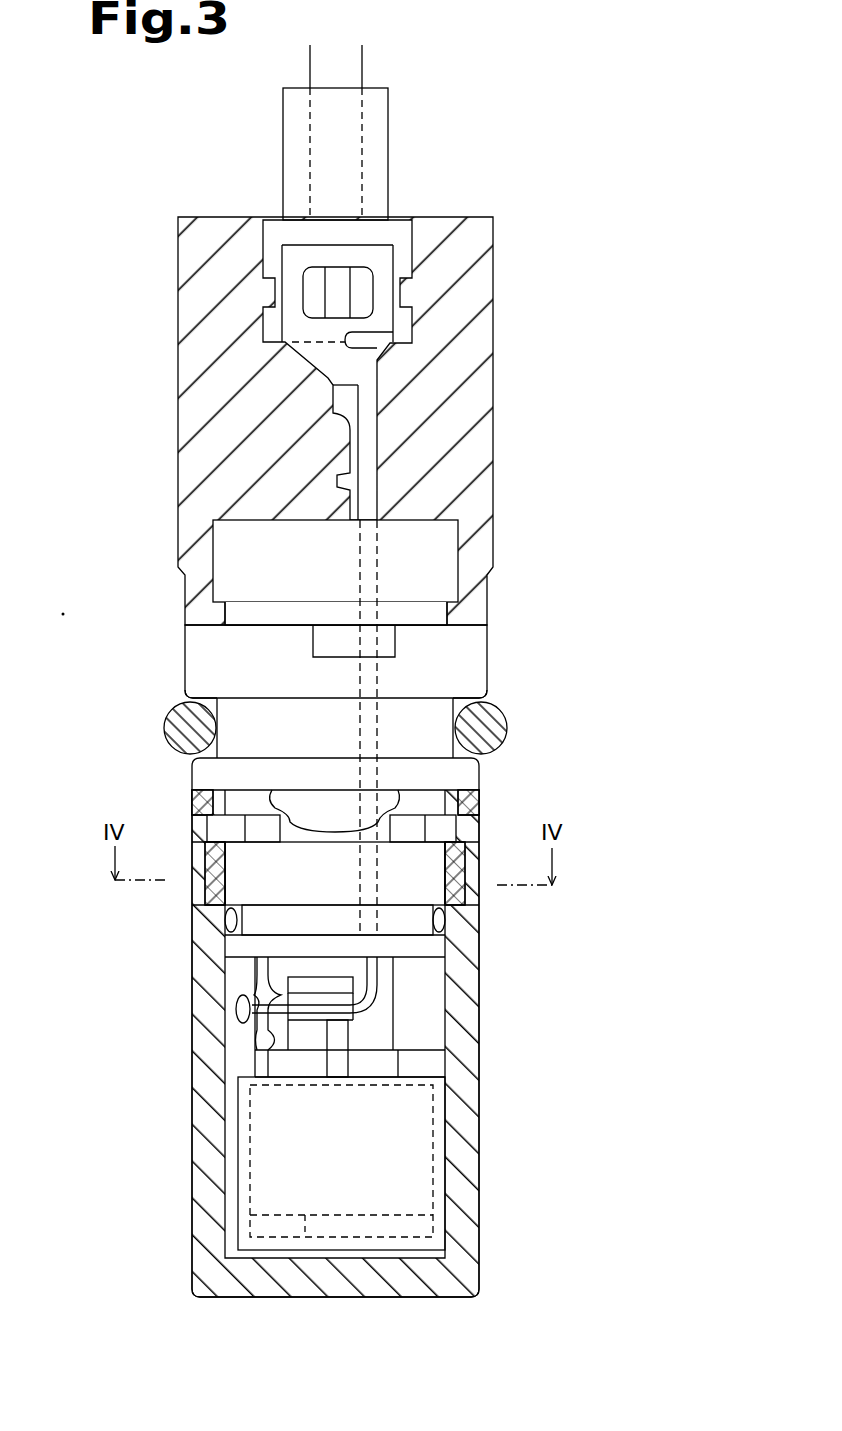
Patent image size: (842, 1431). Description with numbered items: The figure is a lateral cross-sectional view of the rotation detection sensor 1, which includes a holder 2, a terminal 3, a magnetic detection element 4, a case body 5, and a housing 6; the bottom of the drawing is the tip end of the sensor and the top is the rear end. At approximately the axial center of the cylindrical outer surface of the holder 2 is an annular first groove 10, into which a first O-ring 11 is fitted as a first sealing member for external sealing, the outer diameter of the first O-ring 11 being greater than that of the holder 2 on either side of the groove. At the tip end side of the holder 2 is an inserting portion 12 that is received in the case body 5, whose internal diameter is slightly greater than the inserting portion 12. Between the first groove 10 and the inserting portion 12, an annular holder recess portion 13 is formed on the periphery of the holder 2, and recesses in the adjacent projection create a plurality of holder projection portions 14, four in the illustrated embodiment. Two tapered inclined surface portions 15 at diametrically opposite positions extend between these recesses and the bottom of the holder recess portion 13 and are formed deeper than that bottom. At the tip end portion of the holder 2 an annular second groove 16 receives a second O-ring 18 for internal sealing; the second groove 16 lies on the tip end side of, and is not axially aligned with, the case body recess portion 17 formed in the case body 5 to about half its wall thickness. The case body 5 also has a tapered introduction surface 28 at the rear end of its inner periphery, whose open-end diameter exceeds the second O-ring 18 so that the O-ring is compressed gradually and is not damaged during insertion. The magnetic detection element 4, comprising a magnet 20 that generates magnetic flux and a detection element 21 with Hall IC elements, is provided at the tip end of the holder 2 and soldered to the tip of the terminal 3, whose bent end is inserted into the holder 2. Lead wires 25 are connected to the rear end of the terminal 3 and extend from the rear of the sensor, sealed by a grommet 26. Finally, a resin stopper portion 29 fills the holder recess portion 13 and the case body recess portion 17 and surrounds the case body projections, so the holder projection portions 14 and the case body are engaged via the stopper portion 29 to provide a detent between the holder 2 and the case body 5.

The rotation detection sensor 1 is at (600, 193).
The holder 2 is at (486, 662).
The terminal 3 is at (367, 495).
The magnetic detection element 4 is at (238, 1110).
The case body 5 is at (477, 1150).
The housing 6 is at (178, 378).
The first groove 10 is at (196, 697).
The first O-ring 11 is at (168, 724).
The inserting portion 12 is at (447, 936).
The holder recess portion 13 is at (192, 792).
The holder projection portions 14 is at (207, 827).
The inclined surface portions 15 is at (320, 795).
The second groove 16 is at (215, 958).
The case body recess portion 17 is at (205, 892).
The second O-ring 18 is at (225, 920).
The magnet 20 is at (258, 1188).
The detection element 21 is at (367, 1225).
The lead wires 25 is at (362, 75).
The grommet 26 is at (388, 150).
The tapered introduction surface 28 is at (222, 848).
The stopper portion 29 is at (196, 856).